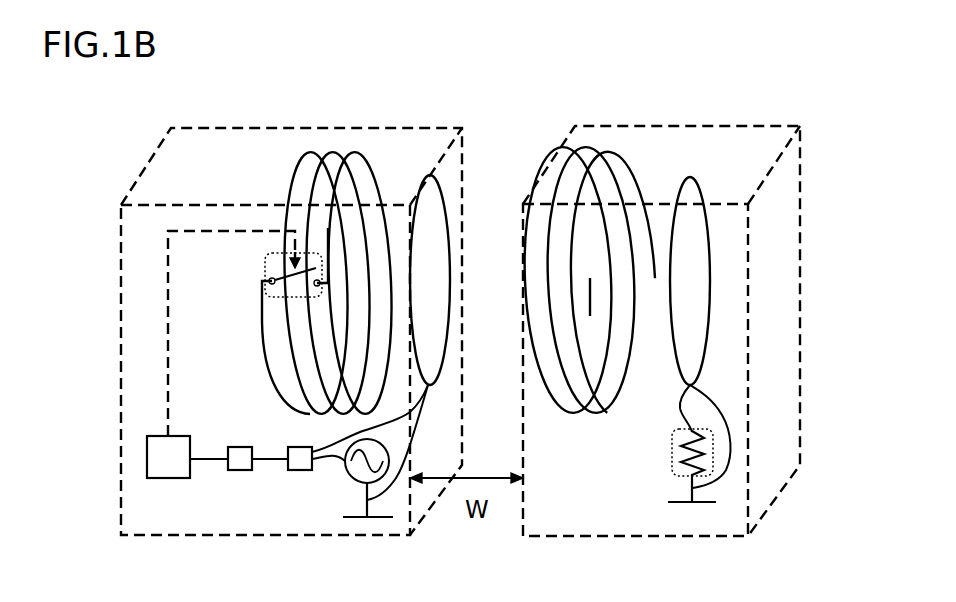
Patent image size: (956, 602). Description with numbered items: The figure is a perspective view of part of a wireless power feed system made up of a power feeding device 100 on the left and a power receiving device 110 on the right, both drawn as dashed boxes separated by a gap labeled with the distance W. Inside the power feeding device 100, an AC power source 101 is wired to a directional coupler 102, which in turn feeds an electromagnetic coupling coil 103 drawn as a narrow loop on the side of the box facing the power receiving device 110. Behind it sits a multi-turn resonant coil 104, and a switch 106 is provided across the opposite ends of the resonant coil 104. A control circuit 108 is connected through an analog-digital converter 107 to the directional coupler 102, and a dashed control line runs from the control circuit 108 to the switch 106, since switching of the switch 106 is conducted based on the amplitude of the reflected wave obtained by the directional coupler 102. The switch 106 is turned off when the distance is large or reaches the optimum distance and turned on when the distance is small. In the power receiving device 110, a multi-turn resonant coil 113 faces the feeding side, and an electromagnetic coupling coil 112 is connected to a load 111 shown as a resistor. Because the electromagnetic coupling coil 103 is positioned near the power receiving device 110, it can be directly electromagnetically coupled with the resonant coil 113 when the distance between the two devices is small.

The power feeding device 100 is at (121, 500).
The AC power source 101 is at (347, 470).
The directional coupler 102 is at (300, 470).
The electromagnetic coupling coil 103 is at (428, 175).
The resonant coil 104 is at (335, 152).
The switch 106 is at (265, 273).
The analog-digital converter 107 is at (241, 470).
The control circuit 108 is at (170, 478).
The power receiving device 110 is at (581, 519).
The load 111 is at (672, 455).
The electromagnetic coupling coil 112 is at (690, 178).
The resonant coil 113 is at (614, 148).